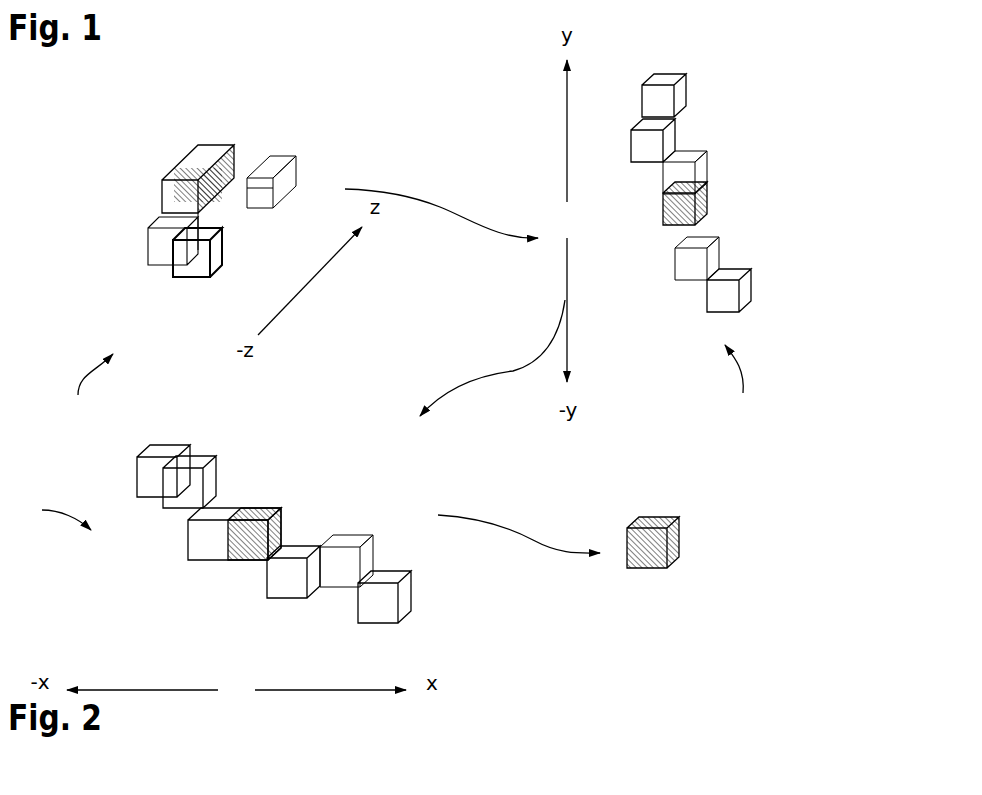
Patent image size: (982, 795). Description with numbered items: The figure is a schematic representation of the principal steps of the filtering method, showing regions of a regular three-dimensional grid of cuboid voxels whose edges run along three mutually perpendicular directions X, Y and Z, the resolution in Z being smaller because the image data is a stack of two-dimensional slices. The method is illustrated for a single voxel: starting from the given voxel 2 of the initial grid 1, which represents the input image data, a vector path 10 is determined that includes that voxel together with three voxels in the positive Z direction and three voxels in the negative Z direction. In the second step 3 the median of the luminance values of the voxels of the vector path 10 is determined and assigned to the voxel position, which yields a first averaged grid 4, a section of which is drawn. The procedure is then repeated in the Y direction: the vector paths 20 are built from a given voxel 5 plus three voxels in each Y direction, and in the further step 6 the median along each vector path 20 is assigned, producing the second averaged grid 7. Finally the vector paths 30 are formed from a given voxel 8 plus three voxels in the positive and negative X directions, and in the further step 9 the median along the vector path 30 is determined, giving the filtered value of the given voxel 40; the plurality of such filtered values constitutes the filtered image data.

The initial grid 1 is at (94, 394).
The given voxel 2 is at (195, 180).
The second step 3 is at (392, 190).
The first averaged grid 4 is at (739, 384).
The given voxel 5 is at (705, 200).
The further step 6 is at (513, 371).
The second averaged grid 7 is at (57, 515).
The given voxel 8 is at (250, 543).
The further step 9 is at (485, 519).
The vector path 10 is at (211, 157).
The vector paths 20 is at (701, 156).
The vector paths 30 is at (305, 565).
The given voxel 40 is at (650, 528).